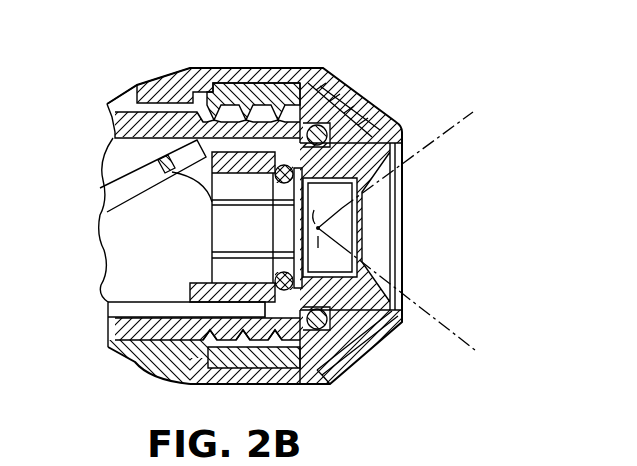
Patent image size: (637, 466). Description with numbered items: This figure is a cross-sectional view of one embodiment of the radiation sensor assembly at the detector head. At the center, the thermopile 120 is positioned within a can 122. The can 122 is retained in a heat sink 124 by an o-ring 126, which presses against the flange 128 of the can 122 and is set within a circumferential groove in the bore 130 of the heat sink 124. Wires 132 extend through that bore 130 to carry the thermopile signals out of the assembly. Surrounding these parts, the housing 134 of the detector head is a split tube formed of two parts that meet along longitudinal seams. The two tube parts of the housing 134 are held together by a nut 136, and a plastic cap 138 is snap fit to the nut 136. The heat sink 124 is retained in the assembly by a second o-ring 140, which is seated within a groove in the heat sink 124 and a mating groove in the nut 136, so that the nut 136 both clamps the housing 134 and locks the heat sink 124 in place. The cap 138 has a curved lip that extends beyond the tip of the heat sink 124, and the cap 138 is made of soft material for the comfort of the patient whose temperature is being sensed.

The thermopile 120 is at (389, 231).
The can 122 is at (372, 180).
The heat sink 124 is at (348, 142).
The o-ring 126 is at (282, 164).
The flange 128 is at (301, 166).
The bore 130 is at (232, 283).
The wires 132 is at (232, 253).
The housing 134 is at (124, 92).
The nut 136 is at (158, 68).
The plastic cap 138 is at (247, 68).
The o-ring 140 is at (335, 355).